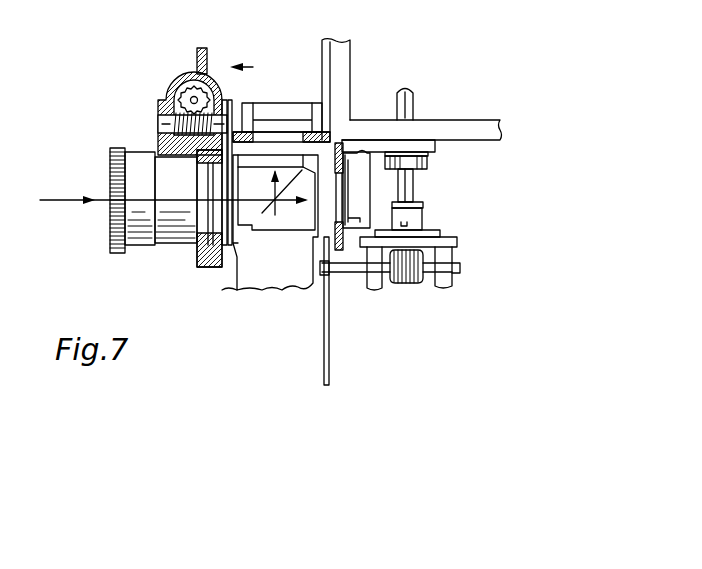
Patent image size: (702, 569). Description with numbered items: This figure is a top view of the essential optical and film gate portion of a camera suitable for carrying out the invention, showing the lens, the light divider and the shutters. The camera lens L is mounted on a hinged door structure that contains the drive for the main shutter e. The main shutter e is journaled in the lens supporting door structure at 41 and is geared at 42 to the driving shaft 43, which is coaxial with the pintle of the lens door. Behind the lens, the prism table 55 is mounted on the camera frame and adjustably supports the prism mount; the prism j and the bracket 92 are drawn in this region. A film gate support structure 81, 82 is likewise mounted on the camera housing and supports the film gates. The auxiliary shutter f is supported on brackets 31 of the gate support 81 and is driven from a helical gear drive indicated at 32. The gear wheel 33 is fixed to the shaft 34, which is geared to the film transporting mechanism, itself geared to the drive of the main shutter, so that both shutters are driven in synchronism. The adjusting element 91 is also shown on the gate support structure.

The journal of main shutter 41 is at (150, 117).
The gearing of main shutter 42 is at (187, 80).
The driving shaft 43 is at (173, 87).
The main shutter e is at (232, 100).
The bracket 92 is at (282, 123).
The film gate support structure 82 is at (338, 77).
The film gate support structure 81 is at (487, 122).
The shaft 34 is at (409, 89).
The adjusting screw 91 is at (350, 195).
The brackets 31 is at (443, 253).
The helical gear drive 32 is at (428, 291).
The gear wheel 33 is at (403, 284).
The prism table 55 is at (298, 278).
The auxiliary shutter f is at (330, 360).
The prism j is at (267, 227).
The camera lens L is at (183, 227).